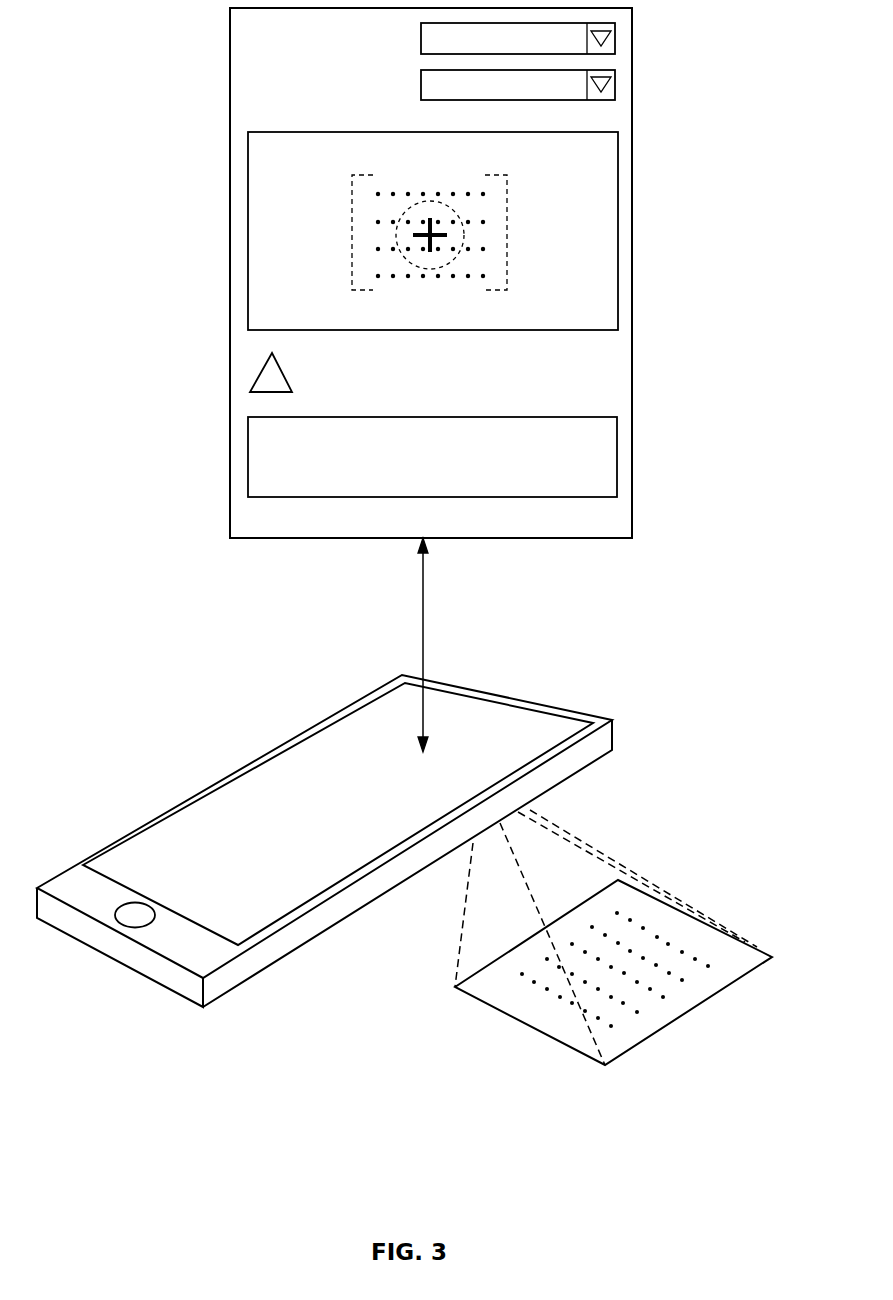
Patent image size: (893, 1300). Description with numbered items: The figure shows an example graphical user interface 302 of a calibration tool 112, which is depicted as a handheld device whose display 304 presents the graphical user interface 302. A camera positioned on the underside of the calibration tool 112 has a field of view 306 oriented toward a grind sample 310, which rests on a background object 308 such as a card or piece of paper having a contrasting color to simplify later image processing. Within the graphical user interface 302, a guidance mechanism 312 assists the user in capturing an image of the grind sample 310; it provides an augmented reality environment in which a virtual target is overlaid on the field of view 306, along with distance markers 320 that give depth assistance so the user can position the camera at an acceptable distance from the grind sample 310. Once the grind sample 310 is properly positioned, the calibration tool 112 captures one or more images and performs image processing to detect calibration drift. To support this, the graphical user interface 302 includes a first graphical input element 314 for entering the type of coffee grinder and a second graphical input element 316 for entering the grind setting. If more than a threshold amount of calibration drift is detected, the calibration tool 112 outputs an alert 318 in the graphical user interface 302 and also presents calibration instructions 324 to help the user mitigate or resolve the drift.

The calibration tool 112 is at (613, 733).
The graphical user interface 302 is at (632, 220).
The display 304 is at (314, 766).
The field of view 306 is at (445, 952).
The background object 308 is at (733, 983).
The grind sample 310 is at (678, 923).
The guidance mechanism 312 is at (247, 230).
The first graphical input element 314 is at (245, 39).
The second graphical input element 316 is at (245, 86).
The alert 318 is at (253, 372).
The distance markers 320 is at (507, 267).
The calibration instructions 324 is at (617, 457).